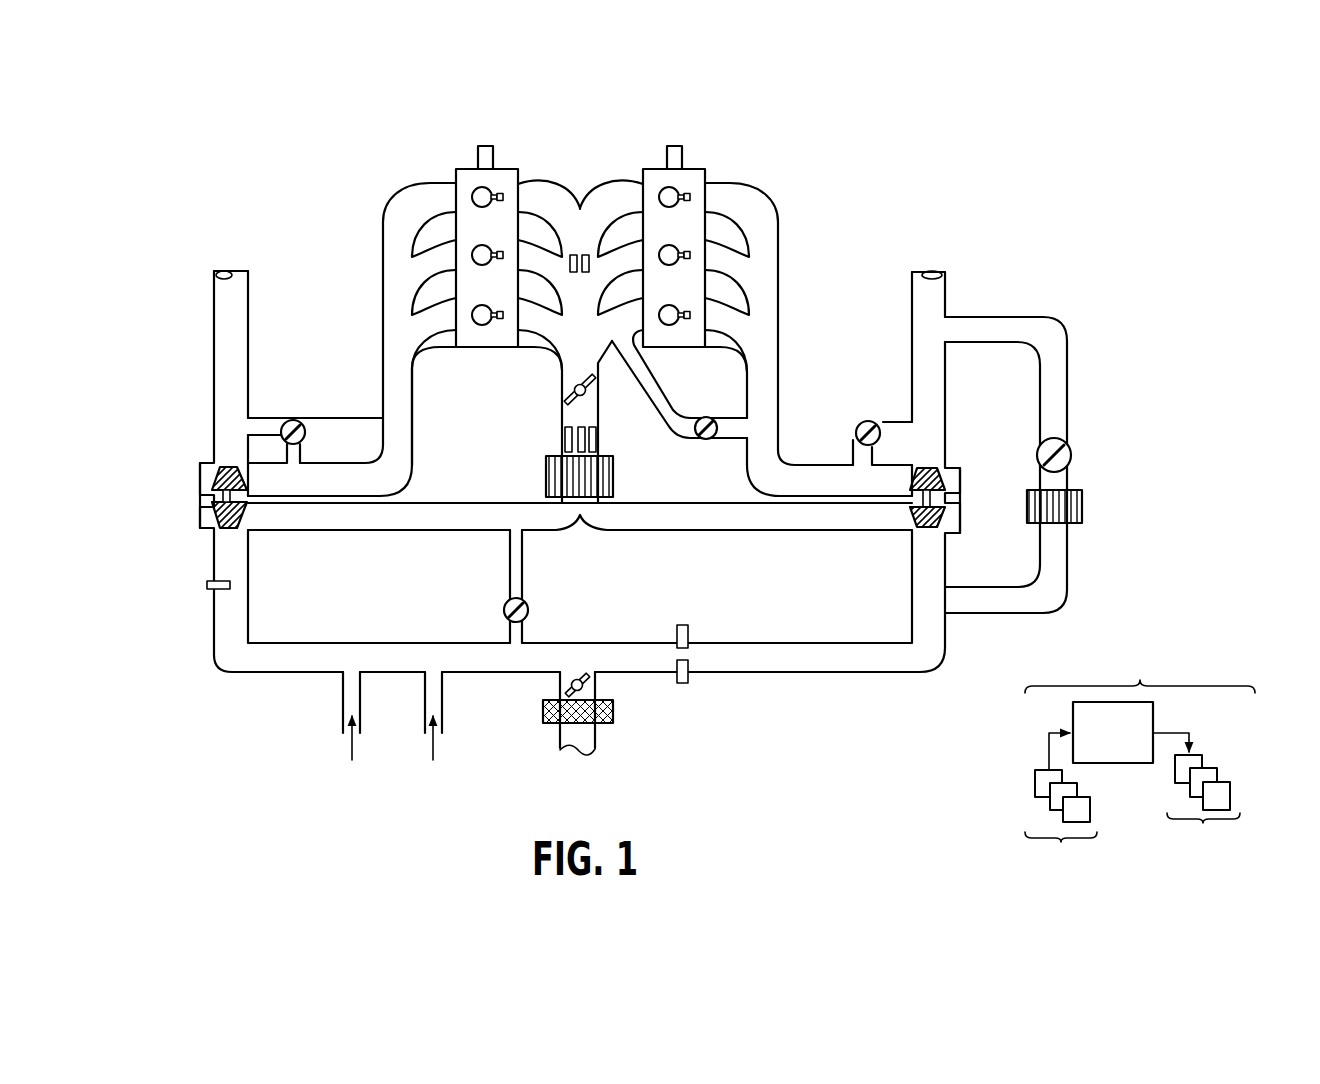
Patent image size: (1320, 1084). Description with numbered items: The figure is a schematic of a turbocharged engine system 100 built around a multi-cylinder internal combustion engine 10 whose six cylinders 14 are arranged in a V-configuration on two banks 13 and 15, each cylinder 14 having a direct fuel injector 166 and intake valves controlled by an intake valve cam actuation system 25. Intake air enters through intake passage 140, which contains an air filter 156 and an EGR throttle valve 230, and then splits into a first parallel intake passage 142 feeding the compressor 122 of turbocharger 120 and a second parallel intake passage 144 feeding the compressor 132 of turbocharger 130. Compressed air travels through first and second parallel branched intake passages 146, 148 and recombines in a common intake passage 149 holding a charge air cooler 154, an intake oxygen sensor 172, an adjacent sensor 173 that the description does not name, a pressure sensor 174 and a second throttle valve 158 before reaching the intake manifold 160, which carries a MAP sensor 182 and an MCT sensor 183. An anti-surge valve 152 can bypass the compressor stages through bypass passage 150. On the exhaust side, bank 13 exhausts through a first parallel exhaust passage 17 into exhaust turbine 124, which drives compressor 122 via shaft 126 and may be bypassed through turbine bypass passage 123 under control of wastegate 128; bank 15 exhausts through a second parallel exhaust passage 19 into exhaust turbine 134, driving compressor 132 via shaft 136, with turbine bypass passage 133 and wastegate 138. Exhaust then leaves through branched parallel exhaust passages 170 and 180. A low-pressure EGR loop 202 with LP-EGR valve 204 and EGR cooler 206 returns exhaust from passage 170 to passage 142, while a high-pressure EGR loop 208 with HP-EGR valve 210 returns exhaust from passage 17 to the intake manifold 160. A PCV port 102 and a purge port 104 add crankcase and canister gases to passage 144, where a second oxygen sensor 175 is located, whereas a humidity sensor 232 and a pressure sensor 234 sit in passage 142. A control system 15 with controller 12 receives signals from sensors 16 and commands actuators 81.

The internal combustion engine 10 is at (915, 168).
The turbocharged engine system 100 is at (1171, 166).
The controller 12 is at (1113, 732).
The first bank 13 is at (703, 163).
The cylinder 14 is at (681, 252).
The control system 15 is at (458, 170).
The sensors 16 is at (1061, 806).
The first parallel exhaust passage 17 is at (778, 402).
The second parallel exhaust passage 19 is at (383, 396).
The intake valve cam actuation system 25 is at (488, 146).
The actuators 81 is at (1199, 799).
The PCV port 102 is at (343, 725).
The purge port 104 is at (425, 725).
The turbocharger 120 is at (929, 460).
The compressor 122 is at (920, 528).
The turbine bypass passage 123 is at (885, 421).
The exhaust turbine 124 is at (940, 470).
The shaft 126 is at (935, 497).
The wastegate 128 is at (858, 425).
The turbocharger 130 is at (236, 453).
The compressor 132 is at (246, 530).
The turbine bypass passage 133 is at (258, 420).
The exhaust turbine 134 is at (212, 472).
The shaft 136 is at (212, 512).
The wastegate 138 is at (302, 425).
The intake passage 140 is at (560, 740).
The first parallel intake passage 142 is at (745, 643).
The second parallel intake passage 144 is at (366, 643).
The first parallel branched intake passage 146 is at (738, 535).
The second parallel branched intake passage 148 is at (346, 535).
The common intake passage 149 is at (562, 375).
The bypass passage 150 is at (523, 575).
The anti-surge valve 152 is at (528, 610).
The charge air cooler 154 is at (614, 476).
The air filter 156 is at (614, 710).
The second air intake throttle valve 158 is at (580, 384).
The intake manifold 160 is at (582, 203).
The fuel injector 166 is at (684, 255).
The branched parallel exhaust passage 170 is at (912, 312).
The intake gas oxygen sensor 172 is at (565, 432).
The emission control device 173 is at (578, 428).
The pressure sensor 174 is at (596, 430).
The second oxygen sensor 175 is at (210, 590).
The branched parallel exhaust passage 180 is at (250, 312).
The intake manifold pressure sensor 182 is at (571, 272).
The intake manifold temperature sensor 183 is at (588, 272).
The low-pressure EGR loop 202 is at (1068, 378).
The LP-EGR valve 204 is at (1068, 447).
The EGR cooler 206 is at (1082, 490).
The high-pressure EGR loop 208 is at (672, 442).
The HP-EGR valve 210 is at (710, 418).
The EGR throttle valve 230 is at (582, 677).
The humidity sensor 232 is at (688, 625).
The pressure sensor 234 is at (688, 683).